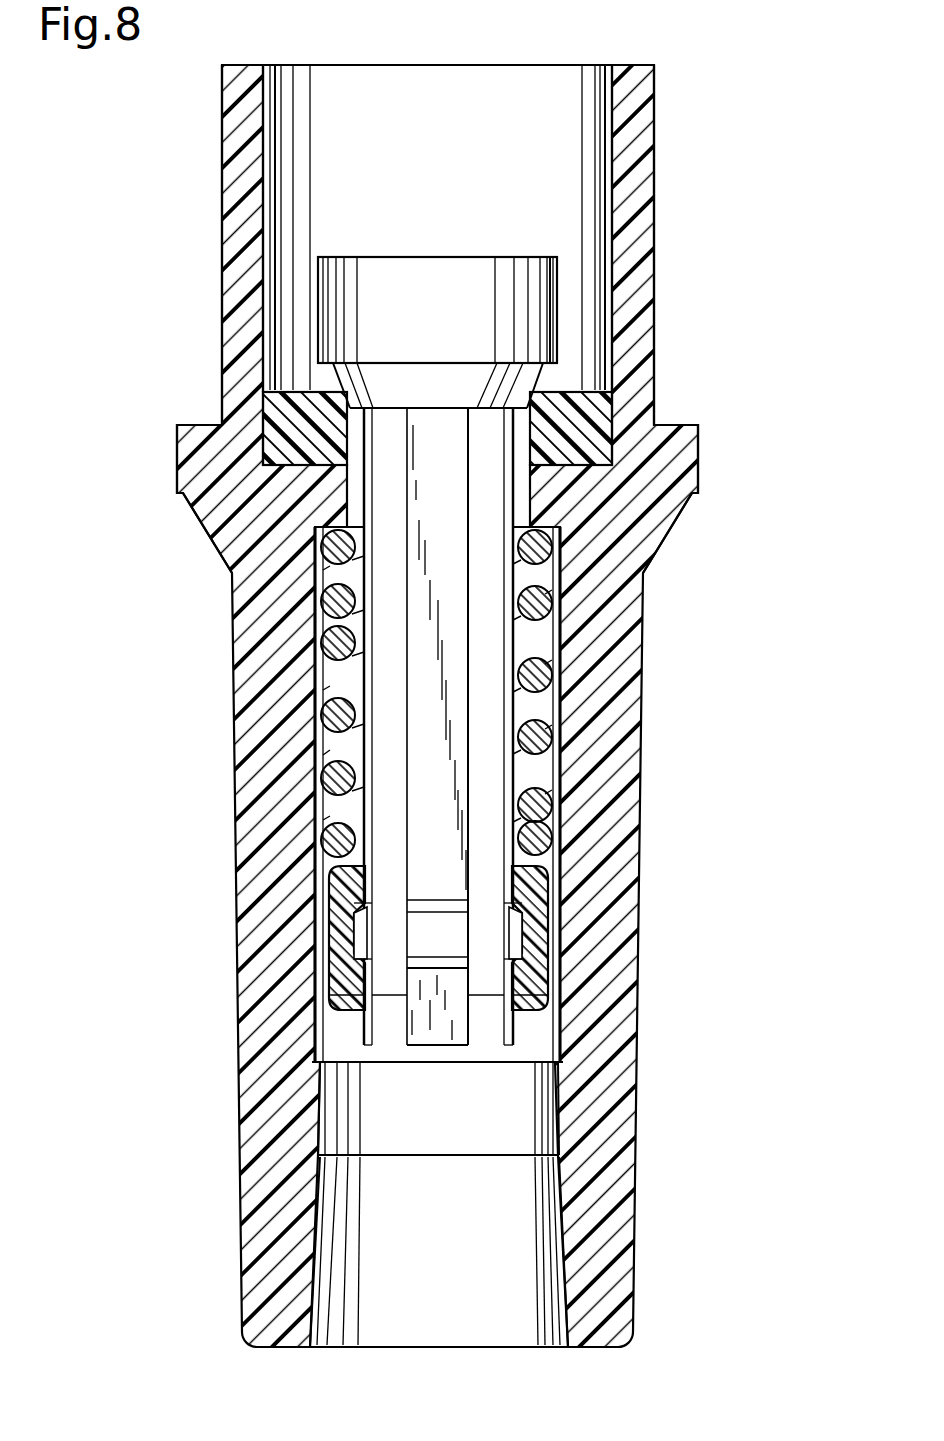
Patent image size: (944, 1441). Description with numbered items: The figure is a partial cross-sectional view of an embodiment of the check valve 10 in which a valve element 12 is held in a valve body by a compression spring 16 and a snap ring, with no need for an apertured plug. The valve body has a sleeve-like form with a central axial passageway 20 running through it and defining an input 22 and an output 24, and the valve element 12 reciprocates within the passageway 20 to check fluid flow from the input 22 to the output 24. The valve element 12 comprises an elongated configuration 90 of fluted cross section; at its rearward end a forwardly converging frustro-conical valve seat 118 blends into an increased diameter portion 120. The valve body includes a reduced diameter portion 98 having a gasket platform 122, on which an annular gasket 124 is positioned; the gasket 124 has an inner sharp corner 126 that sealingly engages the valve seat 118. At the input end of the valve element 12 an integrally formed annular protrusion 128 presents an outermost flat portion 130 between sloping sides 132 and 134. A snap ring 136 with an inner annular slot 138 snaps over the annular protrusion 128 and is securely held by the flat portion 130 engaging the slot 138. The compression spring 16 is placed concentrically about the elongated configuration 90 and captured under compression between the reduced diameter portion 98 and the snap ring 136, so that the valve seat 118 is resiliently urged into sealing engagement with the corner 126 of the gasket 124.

The check valve 10 is at (150, 100).
The valve element 12 is at (443, 258).
The compression spring 16 is at (566, 672).
The central axial passageway 20 is at (545, 716).
The input 22 is at (336, 1361).
The output 24 is at (513, 46).
The elongated configuration 90 is at (507, 632).
The reduced diameter portion 98 is at (548, 494).
The valve seat 118 is at (530, 380).
The increased diameter portion 120 is at (558, 268).
The gasket platform 122 is at (283, 473).
The annular gasket 124 is at (277, 445).
The inner sharp corner 126 is at (262, 398).
The annular protrusion 128 is at (511, 927).
The flat portion 130 is at (518, 962).
The sloping side 132 is at (549, 887).
The sloping side 134 is at (534, 975).
The snap ring 136 is at (330, 895).
The inner annular slot 138 is at (352, 938).